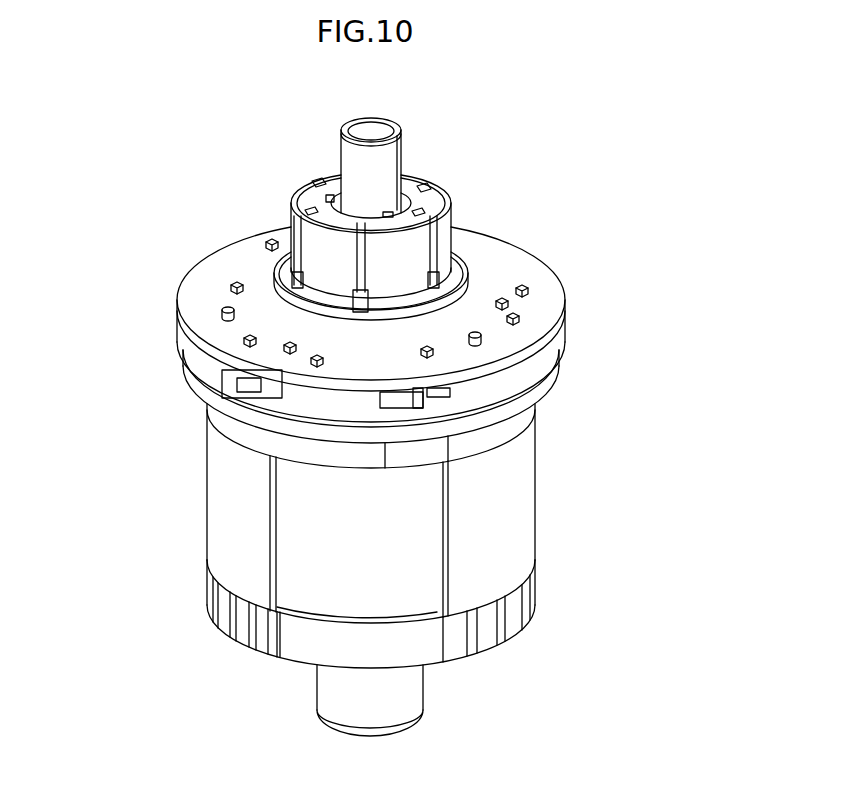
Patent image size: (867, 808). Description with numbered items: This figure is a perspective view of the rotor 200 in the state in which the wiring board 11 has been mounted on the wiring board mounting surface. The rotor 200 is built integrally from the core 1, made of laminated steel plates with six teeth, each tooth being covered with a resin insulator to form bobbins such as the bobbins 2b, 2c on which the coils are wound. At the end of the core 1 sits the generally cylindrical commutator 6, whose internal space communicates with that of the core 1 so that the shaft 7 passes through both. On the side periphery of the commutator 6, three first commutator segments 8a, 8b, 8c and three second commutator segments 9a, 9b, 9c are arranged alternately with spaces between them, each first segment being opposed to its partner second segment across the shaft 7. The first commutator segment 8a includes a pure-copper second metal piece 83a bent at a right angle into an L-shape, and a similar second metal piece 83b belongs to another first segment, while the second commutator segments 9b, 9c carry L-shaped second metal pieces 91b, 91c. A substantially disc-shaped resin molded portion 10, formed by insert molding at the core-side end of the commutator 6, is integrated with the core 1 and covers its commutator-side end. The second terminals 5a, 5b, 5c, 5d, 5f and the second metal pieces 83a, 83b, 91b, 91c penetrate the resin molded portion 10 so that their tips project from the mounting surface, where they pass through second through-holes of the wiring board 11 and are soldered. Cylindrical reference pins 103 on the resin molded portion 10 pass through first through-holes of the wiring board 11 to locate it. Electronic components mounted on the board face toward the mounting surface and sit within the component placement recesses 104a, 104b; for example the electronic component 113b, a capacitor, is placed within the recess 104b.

The rotor 200 is at (570, 154).
The shaft 7 is at (360, 120).
The first commutator segment 8a is at (427, 247).
The first commutator segment 8b is at (303, 193).
The first commutator segment 8c is at (404, 172).
The second commutator segment 9a is at (325, 180).
The second commutator segment 9b is at (441, 195).
The second commutator segment 9c is at (300, 218).
The commutator 6 is at (453, 250).
The wiring board 11 is at (510, 262).
The resin molded portion 10 is at (537, 398).
The component placement recess 104a is at (258, 388).
The component placement recess 104b is at (448, 398).
The electronic component 113b is at (434, 400).
The second metal piece 83a is at (436, 350).
The second metal piece 83b is at (235, 287).
The second terminal 5a is at (520, 320).
The second terminal 5b is at (316, 365).
The second terminal 5c is at (246, 340).
The second terminal 5d is at (268, 244).
The second terminal 5f is at (528, 290).
The second metal piece 91b is at (508, 304).
The second metal piece 91c is at (288, 348).
The reference pin 103 is at (224, 312).
The core 1 is at (536, 547).
The bobbin 2b is at (298, 650).
The bobbin 2c is at (223, 620).